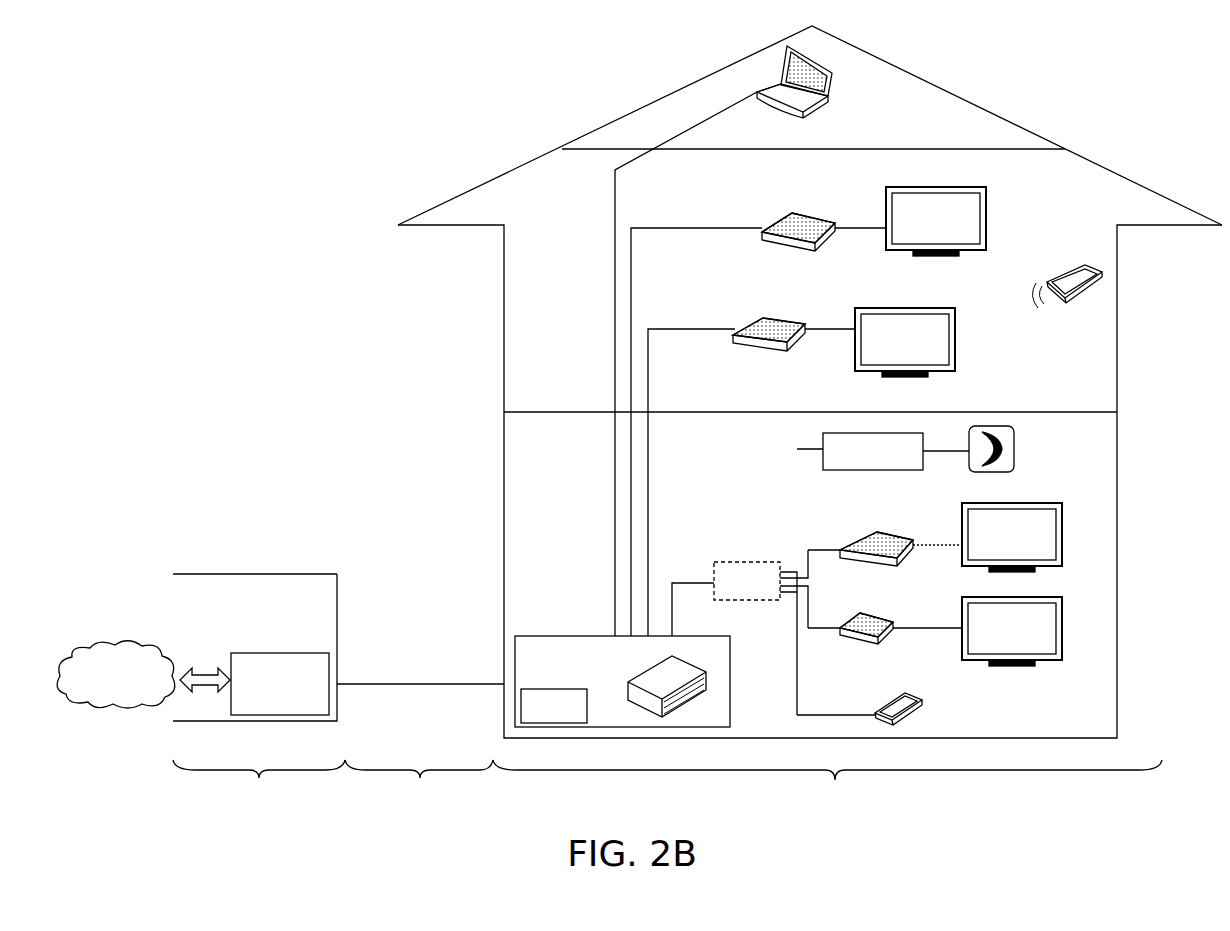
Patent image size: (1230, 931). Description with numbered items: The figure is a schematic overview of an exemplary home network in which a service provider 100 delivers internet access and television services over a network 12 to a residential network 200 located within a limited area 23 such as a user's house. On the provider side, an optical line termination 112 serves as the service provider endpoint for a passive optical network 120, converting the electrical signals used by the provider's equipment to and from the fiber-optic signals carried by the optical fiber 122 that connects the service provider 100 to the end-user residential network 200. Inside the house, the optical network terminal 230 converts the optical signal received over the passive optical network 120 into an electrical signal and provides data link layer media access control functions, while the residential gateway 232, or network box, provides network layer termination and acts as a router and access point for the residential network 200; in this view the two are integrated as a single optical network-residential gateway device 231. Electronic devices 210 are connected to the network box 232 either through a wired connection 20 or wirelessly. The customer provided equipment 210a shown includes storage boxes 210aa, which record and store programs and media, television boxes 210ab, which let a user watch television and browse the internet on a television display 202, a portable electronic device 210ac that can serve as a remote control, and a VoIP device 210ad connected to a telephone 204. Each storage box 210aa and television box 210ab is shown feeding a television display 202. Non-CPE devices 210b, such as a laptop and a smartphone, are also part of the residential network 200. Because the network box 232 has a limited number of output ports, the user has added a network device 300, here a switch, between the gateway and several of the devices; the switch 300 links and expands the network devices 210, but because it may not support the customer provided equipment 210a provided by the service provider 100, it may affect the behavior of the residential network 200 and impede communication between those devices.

The network 12 is at (110, 646).
The optical line termination 112 is at (280, 652).
The optical fiber 122 is at (410, 683).
The service provider 100 is at (259, 686).
The passive optical network 120 is at (419, 779).
The residential network 200 is at (810, 419).
The limited area 23 is at (487, 172).
The wired connection 20 is at (648, 563).
The optical network-residential gateway device 231 is at (532, 636).
The optical network terminal 230 is at (554, 688).
The residential gateway 232 is at (650, 676).
The network device 300 is at (747, 562).
The television display 202 is at (968, 252).
The telephone 204 is at (1016, 448).
The electronic device 210 is at (769, 88).
The customer provided equipment 210a is at (777, 222).
The storage box 210aa is at (858, 532).
The television box 210ab is at (841, 628).
The portable electronic device 210ac is at (890, 703).
The VoIP device 210ad is at (822, 441).
The non-CPE 210b is at (836, 90).